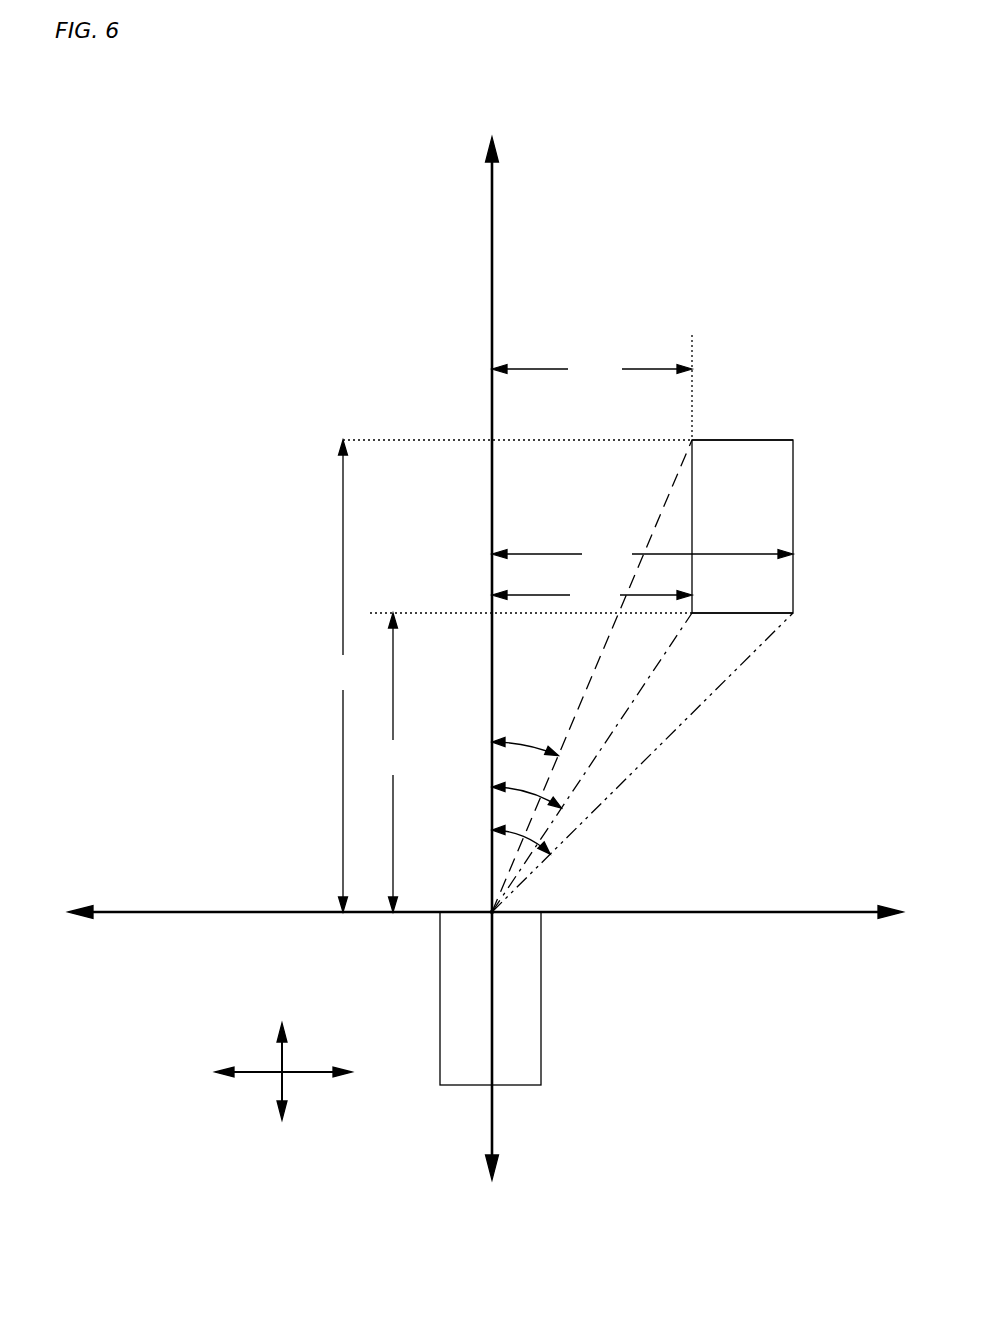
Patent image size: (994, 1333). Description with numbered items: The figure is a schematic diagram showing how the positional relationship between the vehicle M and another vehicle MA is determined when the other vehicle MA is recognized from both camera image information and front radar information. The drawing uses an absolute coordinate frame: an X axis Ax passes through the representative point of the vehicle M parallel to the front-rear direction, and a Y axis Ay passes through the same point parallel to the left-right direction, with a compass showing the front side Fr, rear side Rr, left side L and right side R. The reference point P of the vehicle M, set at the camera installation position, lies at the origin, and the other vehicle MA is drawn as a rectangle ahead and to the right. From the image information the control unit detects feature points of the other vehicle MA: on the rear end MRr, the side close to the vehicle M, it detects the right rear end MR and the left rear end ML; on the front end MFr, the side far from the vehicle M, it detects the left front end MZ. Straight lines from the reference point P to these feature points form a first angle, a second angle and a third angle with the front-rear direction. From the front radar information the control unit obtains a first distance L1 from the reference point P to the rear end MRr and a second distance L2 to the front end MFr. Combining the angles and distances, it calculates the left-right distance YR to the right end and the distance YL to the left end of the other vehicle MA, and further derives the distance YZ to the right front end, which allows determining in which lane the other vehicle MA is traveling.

The X axis Ax is at (492, 185).
The Y axis Ay is at (142, 912).
The reference point P is at (492, 912).
The vehicle M is at (520, 1085).
The other vehicle MA is at (756, 535).
The left front end MZ is at (692, 440).
The front end MFr is at (752, 440).
The right rear end MR is at (793, 613).
The rear end MRr is at (742, 613).
The left rear end ML is at (692, 613).
The second distance L2 is at (511, 676).
The first distance L1 is at (531, 762).
The distance to right front end YZ is at (592, 370).
The distance to right end YR is at (642, 555).
The distance to left end YL is at (592, 596).
The front side Fr is at (282, 1047).
The rear side Rr is at (283, 1127).
The left side L is at (266, 1073).
The right side R is at (352, 1073).